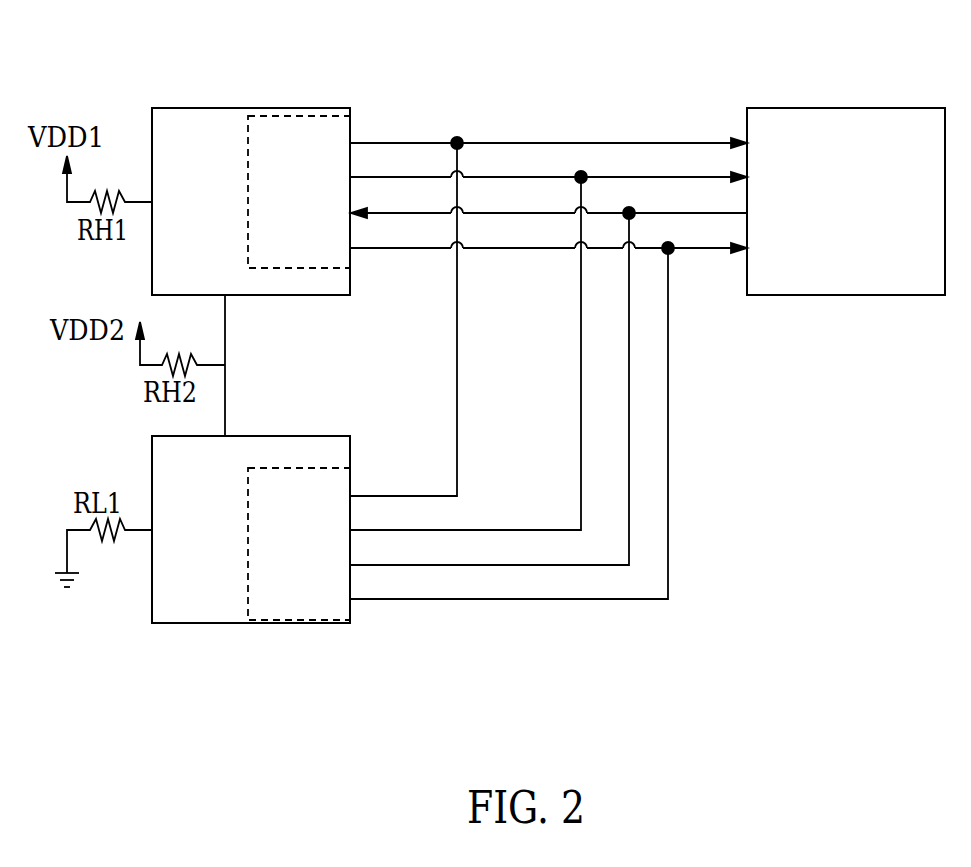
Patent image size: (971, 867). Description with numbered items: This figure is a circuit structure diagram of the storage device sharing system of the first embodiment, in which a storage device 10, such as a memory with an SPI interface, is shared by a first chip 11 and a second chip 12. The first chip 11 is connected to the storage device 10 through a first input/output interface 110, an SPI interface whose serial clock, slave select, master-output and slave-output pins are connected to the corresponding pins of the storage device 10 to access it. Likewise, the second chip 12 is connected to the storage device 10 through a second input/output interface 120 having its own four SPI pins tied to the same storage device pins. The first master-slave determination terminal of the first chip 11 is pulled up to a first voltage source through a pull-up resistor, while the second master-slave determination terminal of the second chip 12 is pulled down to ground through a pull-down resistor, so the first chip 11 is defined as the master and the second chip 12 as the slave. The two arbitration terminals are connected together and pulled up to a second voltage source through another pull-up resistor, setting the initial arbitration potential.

The storage device 10 is at (848, 107).
The first chip 11 is at (251, 171).
The first input/output interface 110 is at (310, 114).
The second chip 12 is at (251, 527).
The second input/output interface 120 is at (305, 624).